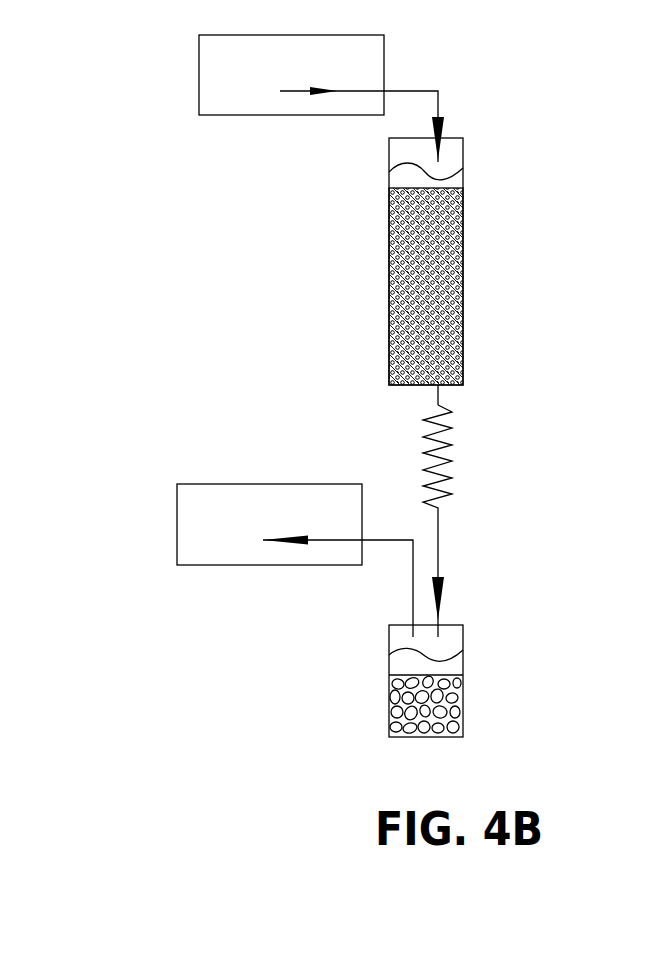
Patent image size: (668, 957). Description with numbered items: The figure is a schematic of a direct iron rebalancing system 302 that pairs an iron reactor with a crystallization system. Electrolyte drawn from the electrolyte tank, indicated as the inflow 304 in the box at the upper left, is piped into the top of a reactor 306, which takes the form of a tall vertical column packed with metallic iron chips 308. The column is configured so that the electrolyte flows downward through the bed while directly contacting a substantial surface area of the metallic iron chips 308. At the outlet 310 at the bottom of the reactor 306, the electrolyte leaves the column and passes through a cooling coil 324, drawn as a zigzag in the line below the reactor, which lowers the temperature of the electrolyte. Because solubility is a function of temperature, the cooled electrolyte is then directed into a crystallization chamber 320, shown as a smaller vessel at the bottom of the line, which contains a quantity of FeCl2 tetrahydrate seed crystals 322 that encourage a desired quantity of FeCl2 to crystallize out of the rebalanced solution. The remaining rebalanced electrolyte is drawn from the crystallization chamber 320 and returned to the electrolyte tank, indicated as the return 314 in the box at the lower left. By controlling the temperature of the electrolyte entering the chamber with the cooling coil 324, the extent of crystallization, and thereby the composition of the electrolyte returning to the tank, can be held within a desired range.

The system 302 is at (233, 308).
The electrolyte inflow from electrolyte tank 304 is at (333, 116).
The reactor 306 is at (502, 261).
The metallic iron chips 308 is at (463, 220).
The outlet of the reactor 310 is at (433, 390).
The electrolyte return to electrolyte tank 314 is at (265, 567).
The crystallization chamber 320 is at (499, 680).
The seed crystals 322 is at (463, 677).
The cooling coil 324 is at (452, 442).